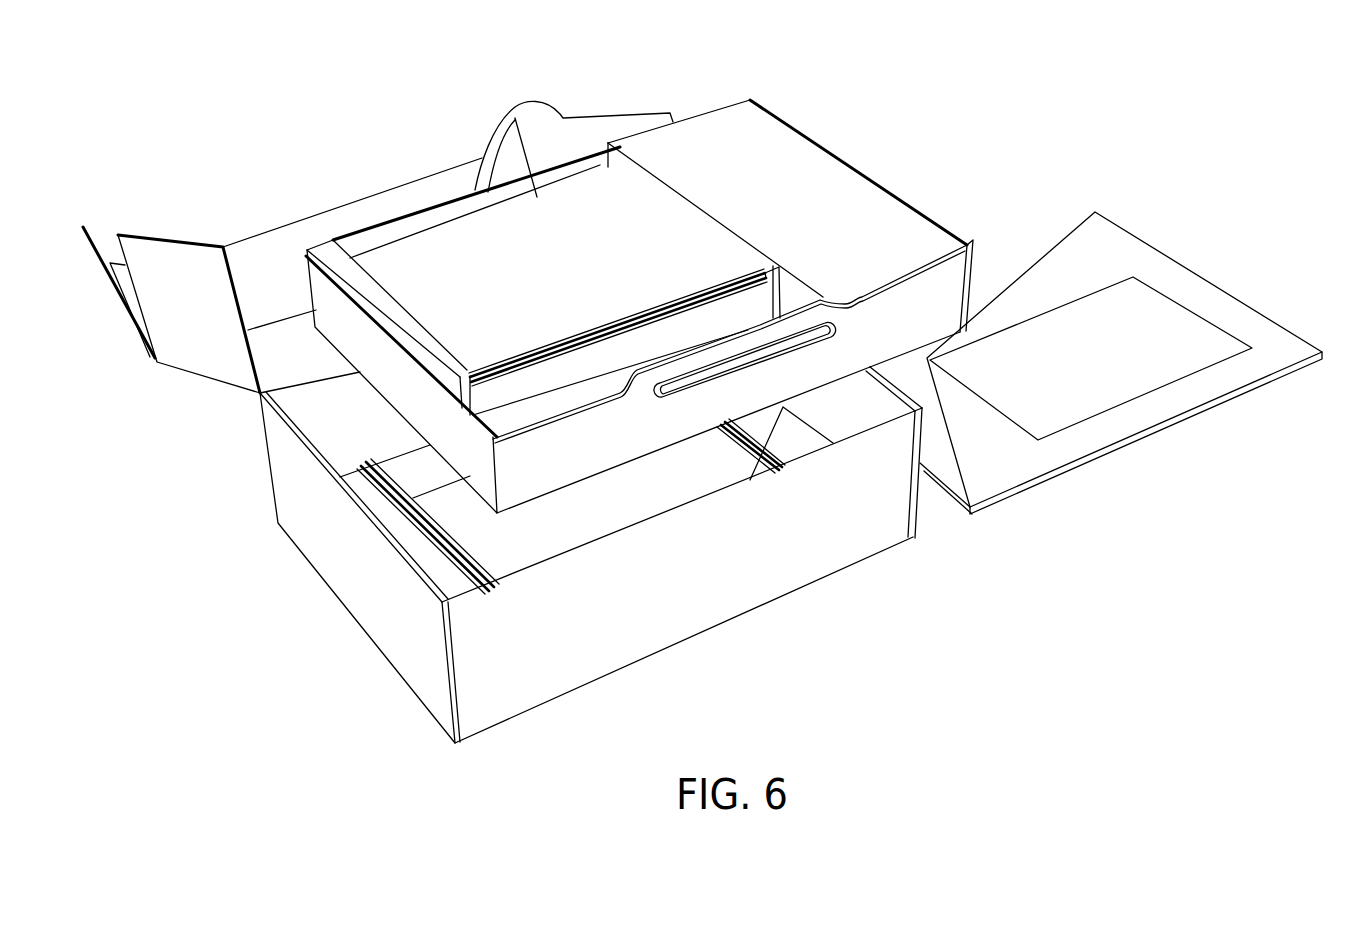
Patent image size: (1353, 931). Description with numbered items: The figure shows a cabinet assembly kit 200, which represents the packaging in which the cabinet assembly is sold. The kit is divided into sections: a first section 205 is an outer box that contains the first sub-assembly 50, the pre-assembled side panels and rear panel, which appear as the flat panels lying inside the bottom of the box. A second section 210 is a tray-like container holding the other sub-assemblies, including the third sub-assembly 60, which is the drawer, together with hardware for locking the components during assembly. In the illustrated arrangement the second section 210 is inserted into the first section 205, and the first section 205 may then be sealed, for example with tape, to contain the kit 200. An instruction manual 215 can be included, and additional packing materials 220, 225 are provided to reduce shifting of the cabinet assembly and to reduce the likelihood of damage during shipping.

The cabinet assembly kit 200 is at (1048, 96).
The first section 205 is at (436, 693).
The first sub-assembly 50 is at (384, 521).
The third sub-assembly 60 is at (358, 222).
The second section 210 is at (485, 191).
The packing material 220 is at (817, 170).
The packing material 225 is at (1103, 237).
The instruction manual 215 is at (1078, 409).